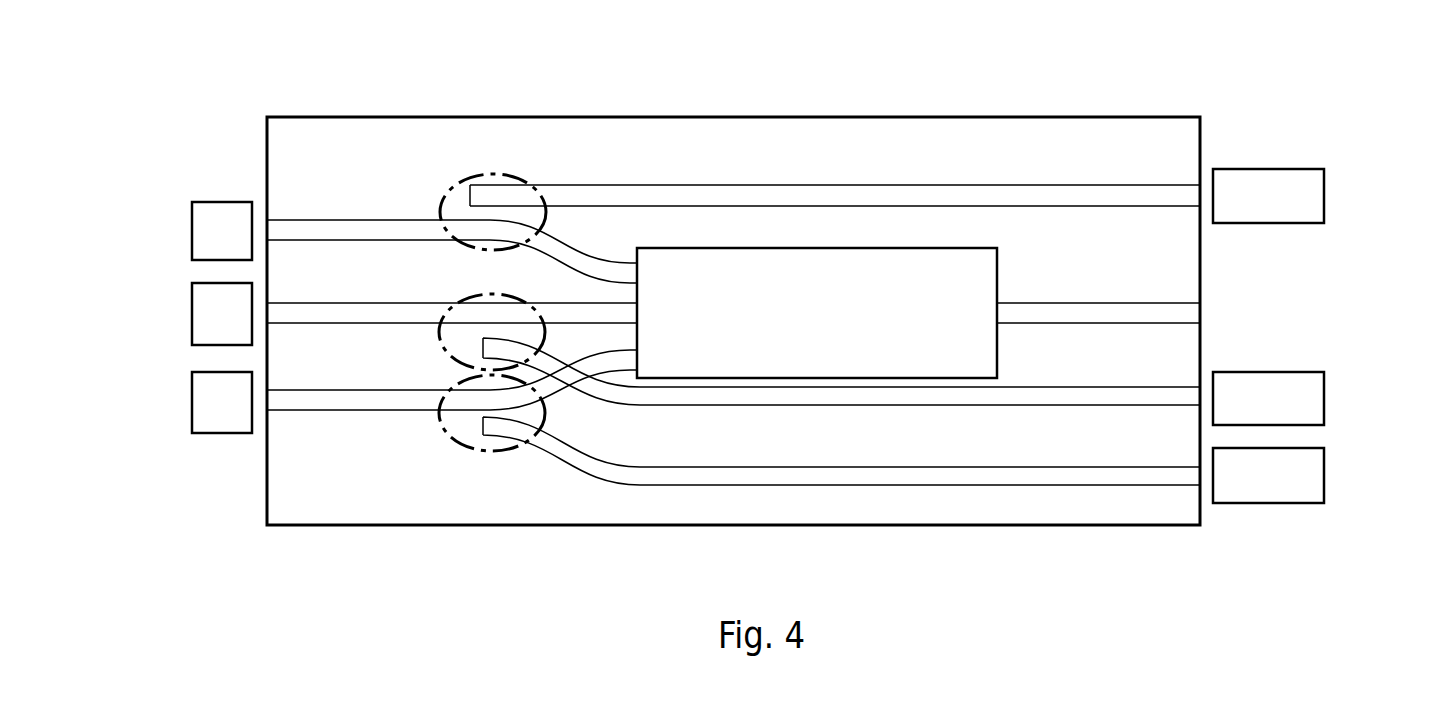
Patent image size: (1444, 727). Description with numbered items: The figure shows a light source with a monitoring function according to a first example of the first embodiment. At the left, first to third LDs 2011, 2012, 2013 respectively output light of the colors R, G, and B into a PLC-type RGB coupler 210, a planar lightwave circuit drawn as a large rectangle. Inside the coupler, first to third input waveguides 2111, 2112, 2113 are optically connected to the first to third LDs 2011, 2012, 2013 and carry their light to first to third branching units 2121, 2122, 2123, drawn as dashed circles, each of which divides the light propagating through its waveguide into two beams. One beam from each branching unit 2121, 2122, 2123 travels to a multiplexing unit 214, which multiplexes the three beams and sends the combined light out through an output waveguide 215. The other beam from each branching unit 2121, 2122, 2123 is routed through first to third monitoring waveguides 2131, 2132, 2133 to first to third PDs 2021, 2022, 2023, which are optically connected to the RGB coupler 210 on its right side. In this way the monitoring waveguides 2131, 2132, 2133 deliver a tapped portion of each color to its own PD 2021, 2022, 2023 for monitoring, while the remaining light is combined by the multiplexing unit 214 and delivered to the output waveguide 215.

The PLC-type RGB coupler 210 is at (1028, 117).
The first LD 2011 is at (192, 233).
The second LD 2012 is at (192, 315).
The third LD 2013 is at (192, 403).
The first PD 2021 is at (1324, 196).
The second PD 2022 is at (1324, 397).
The third PD 2023 is at (1324, 475).
The first input waveguide 2111 is at (386, 224).
The second input waveguide 2112 is at (386, 307).
The third input waveguide 2113 is at (386, 394).
The first branching unit 2121 is at (470, 176).
The second branching unit 2122 is at (470, 296).
The third branching unit 2123 is at (468, 452).
The first monitoring waveguide 2131 is at (1062, 193).
The second monitoring waveguide 2132 is at (1062, 393).
The third monitoring waveguide 2133 is at (1062, 471).
The multiplexing unit 214 is at (922, 248).
The output waveguide 215 is at (1062, 308).